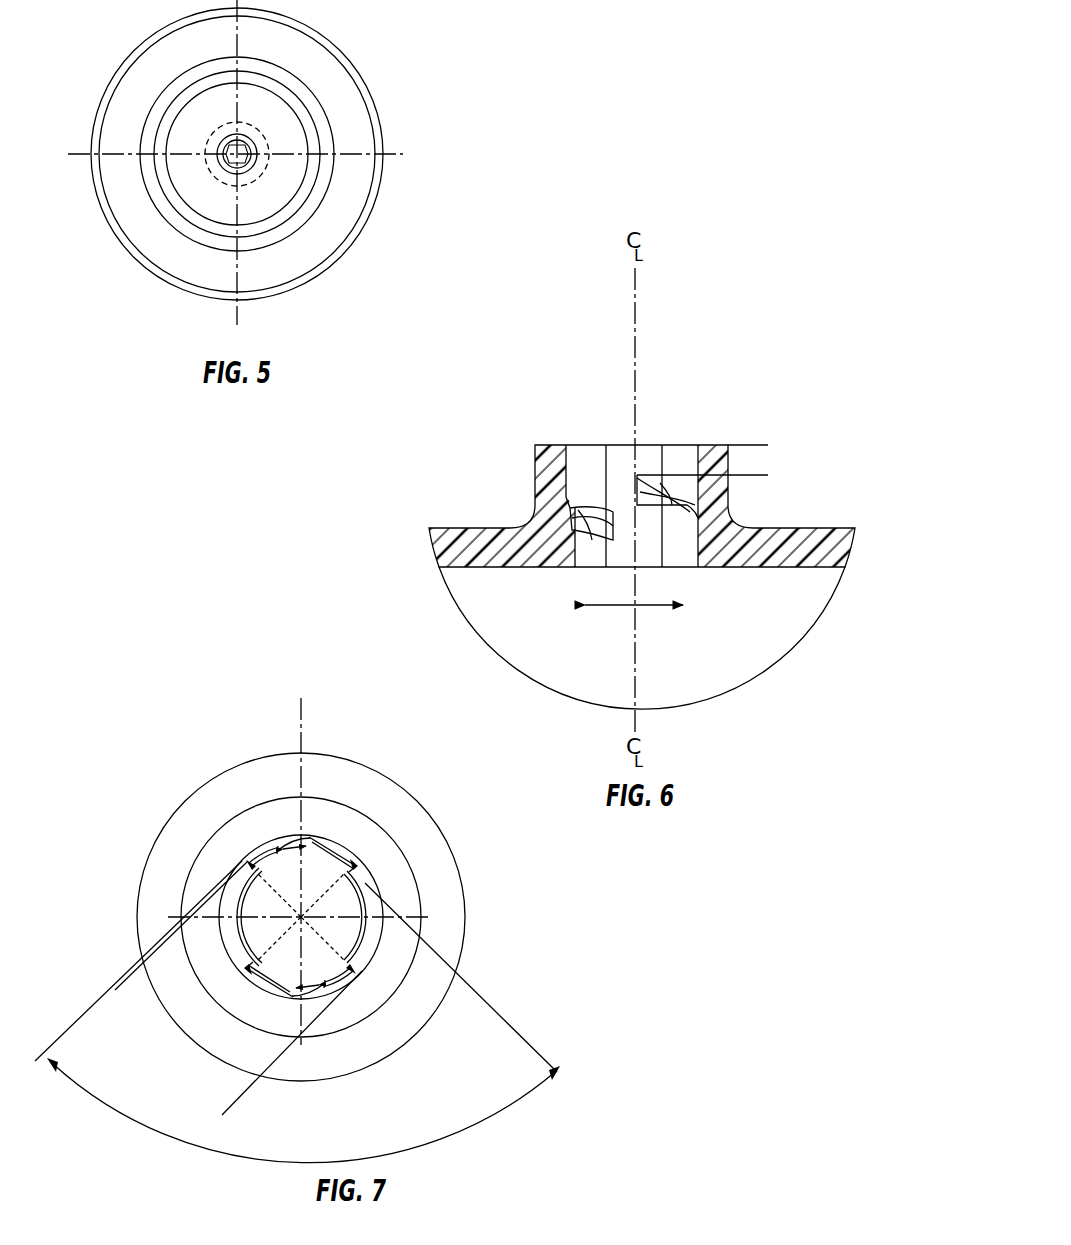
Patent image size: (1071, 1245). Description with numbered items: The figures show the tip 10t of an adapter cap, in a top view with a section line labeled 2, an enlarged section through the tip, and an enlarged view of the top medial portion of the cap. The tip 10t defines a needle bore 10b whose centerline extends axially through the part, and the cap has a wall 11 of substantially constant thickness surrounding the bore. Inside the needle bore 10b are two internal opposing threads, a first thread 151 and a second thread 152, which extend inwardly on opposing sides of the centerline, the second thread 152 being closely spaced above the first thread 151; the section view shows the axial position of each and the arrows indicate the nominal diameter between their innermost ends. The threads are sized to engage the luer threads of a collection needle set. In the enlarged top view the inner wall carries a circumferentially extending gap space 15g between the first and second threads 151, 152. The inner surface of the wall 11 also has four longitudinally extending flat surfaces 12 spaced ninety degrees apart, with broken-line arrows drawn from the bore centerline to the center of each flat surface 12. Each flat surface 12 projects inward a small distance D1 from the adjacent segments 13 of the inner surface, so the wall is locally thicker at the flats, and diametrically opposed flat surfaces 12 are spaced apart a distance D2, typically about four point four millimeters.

In FIG. 5, the section line 2- 2 is at (68, 154).
In FIG. 6, the tip 10t is at (642, 497).
In FIG. 6, the needle bore 10b is at (642, 543).
In FIG. 6, the wall 11 is at (703, 445).
In FIG. 6, the flat surfaces 12 is at (678, 462).
In FIG. 7, the flat surfaces 12 is at (247, 862).
In FIG. 7, the segments 13 is at (238, 860).
In FIG. 6, the first thread 151 is at (590, 472).
In FIG. 7, the first thread 151 is at (245, 858).
In FIG. 6, the second thread 152 is at (722, 477).
In FIG. 7, the second thread 152 is at (367, 883).
In FIG. 7, the gap space 15g is at (290, 837).
In FIG. 7, the small distance D1 is at (104, 990).
In FIG. 7, the distance D2 is at (118, 997).